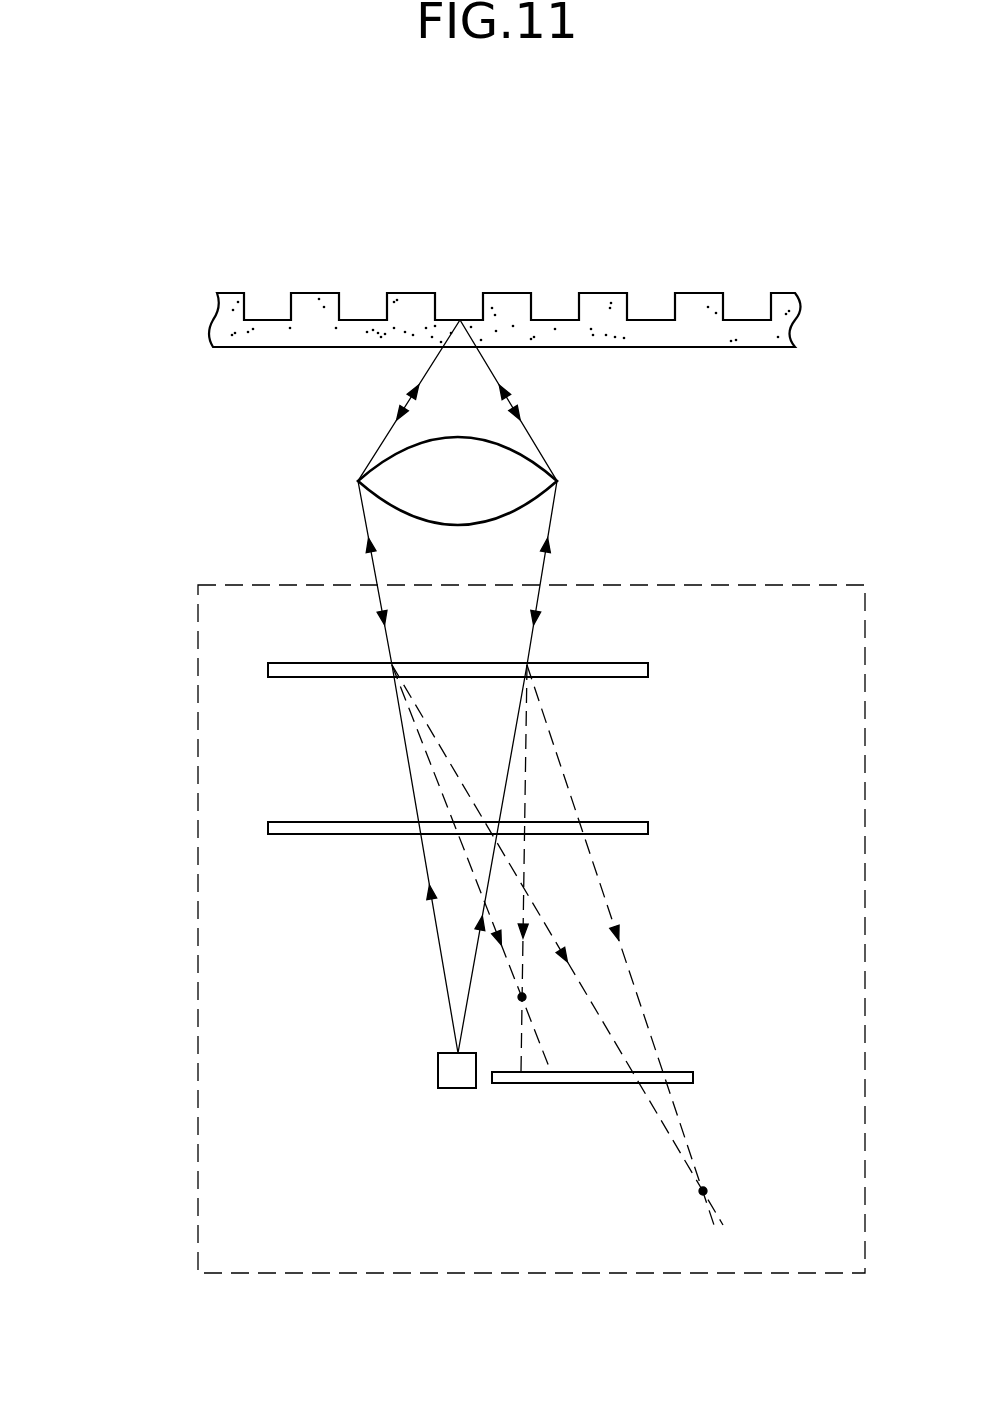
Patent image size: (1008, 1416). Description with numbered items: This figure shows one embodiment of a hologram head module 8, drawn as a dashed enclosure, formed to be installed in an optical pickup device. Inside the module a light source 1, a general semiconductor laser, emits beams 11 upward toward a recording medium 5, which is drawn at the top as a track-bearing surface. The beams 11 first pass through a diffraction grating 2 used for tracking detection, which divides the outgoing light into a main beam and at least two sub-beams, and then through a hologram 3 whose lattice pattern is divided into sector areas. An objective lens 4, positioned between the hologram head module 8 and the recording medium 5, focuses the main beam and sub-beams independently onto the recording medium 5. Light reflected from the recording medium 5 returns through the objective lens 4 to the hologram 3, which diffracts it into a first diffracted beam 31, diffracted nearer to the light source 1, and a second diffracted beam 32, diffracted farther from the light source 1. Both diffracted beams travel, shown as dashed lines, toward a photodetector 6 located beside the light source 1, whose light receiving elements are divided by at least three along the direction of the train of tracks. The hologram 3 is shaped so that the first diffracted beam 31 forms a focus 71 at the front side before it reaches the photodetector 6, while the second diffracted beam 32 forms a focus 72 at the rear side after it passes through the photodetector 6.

The light source 1 is at (447, 1070).
The diffraction grating 2 is at (293, 828).
The hologram 3 is at (308, 668).
The objective lens 4 is at (397, 471).
The recording medium 5 is at (255, 338).
The photodetector 6 is at (680, 1072).
The hologram head module 8 is at (198, 965).
The beams 11 is at (474, 952).
The first diffracted beam 31 is at (522, 963).
The second diffracted beam 32 is at (630, 970).
The focus 71 is at (520, 997).
The focus 72 is at (706, 1188).